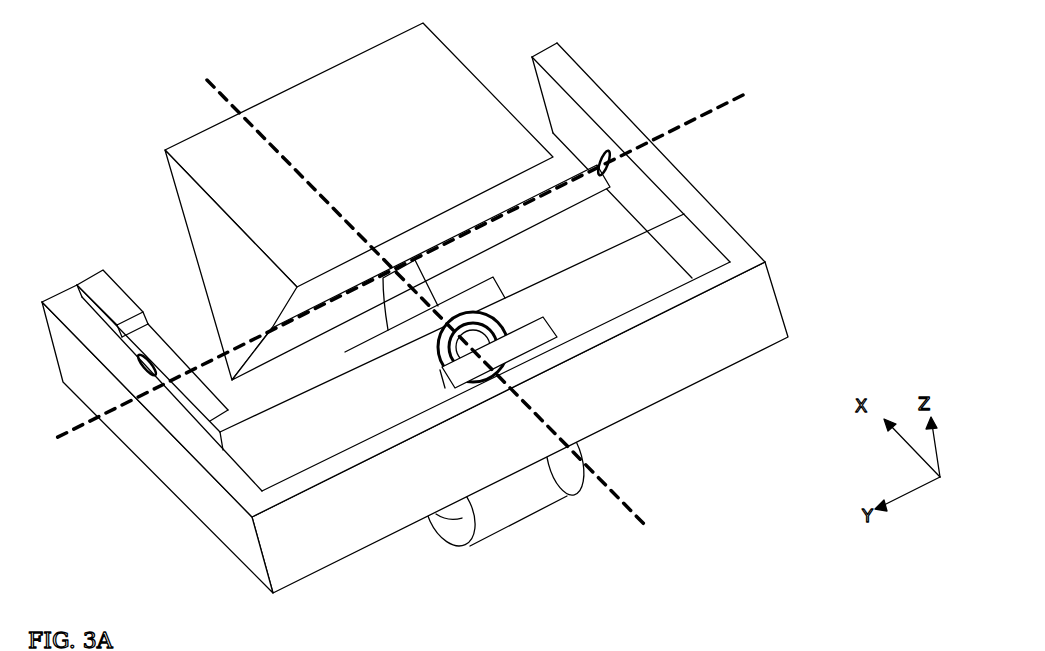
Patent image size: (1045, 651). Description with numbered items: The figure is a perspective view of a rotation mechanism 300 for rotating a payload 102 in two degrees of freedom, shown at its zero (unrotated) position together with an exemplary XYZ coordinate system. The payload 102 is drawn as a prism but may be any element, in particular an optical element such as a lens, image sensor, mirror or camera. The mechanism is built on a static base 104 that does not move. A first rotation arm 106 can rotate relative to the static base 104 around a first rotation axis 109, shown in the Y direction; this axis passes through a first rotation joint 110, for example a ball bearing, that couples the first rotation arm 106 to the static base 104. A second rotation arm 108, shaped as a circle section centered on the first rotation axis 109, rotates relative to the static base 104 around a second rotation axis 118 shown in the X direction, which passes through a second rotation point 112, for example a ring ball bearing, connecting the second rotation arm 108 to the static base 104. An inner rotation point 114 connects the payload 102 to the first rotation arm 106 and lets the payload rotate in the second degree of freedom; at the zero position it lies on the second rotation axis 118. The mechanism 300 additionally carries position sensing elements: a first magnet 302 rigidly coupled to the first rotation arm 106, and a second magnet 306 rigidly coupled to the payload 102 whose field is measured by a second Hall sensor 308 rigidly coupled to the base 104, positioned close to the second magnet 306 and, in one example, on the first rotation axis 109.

The payload 102 is at (405, 80).
The static base 104 is at (765, 305).
The first rotation arm 106 is at (222, 417).
The second rotation arm 108 is at (510, 498).
The first rotation axis 109 is at (744, 97).
The first rotation joint 110 is at (145, 358).
The second rotation point 112 is at (520, 363).
The inner rotation point 114 is at (512, 317).
The second rotation axis 118 is at (605, 478).
The rotation mechanism 300 is at (842, 40).
The first magnet 302 is at (107, 290).
The second magnet 306 is at (577, 163).
The second Hall sensor 308 is at (605, 156).